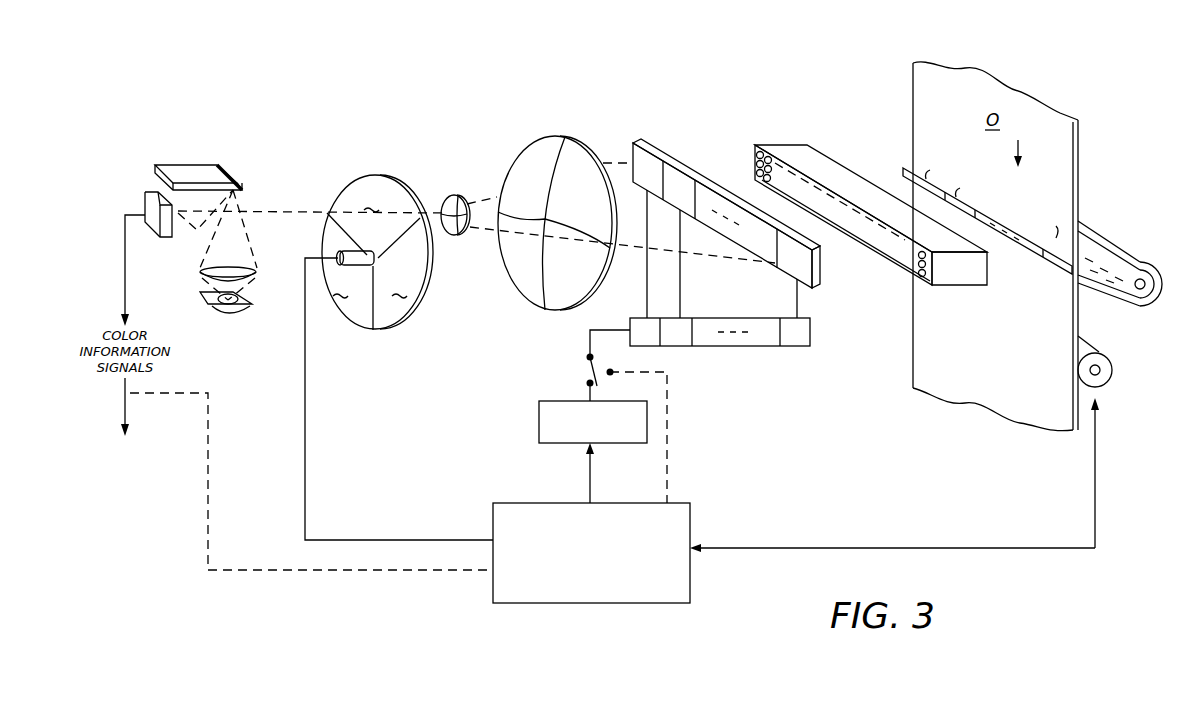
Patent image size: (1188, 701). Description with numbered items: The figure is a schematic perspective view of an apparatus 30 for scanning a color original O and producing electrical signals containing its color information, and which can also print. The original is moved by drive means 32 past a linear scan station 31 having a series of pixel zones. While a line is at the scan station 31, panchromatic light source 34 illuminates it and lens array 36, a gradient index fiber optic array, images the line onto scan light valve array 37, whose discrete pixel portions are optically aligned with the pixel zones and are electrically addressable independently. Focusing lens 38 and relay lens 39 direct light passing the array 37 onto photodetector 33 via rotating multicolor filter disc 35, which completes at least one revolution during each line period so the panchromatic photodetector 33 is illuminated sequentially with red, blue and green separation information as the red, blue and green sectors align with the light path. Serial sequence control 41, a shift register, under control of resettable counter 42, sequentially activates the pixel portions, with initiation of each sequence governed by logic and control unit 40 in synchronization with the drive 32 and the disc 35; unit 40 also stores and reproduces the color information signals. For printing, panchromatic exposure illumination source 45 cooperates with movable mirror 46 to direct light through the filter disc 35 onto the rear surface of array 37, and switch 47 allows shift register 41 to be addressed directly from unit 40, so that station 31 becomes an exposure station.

The apparatus 30 is at (479, 78).
The linear scan station 31 is at (904, 169).
The drive means 32 is at (1116, 347).
The photodetector 33 is at (145, 197).
The panchromatic light source 34 is at (1114, 240).
The rotating multicolor filter disc 35 is at (380, 178).
The lens array 36 is at (788, 145).
The scan light valve array 37 is at (640, 139).
The focusing lens 38 is at (545, 137).
The relay lens 39 is at (458, 195).
The logic and control unit 40 is at (508, 503).
The serial sequence control 41 is at (757, 347).
The resettable counter 42 is at (538, 426).
The exposure illumination source 45 is at (250, 278).
The movable mirror 46 is at (205, 159).
The switch 47 is at (586, 373).